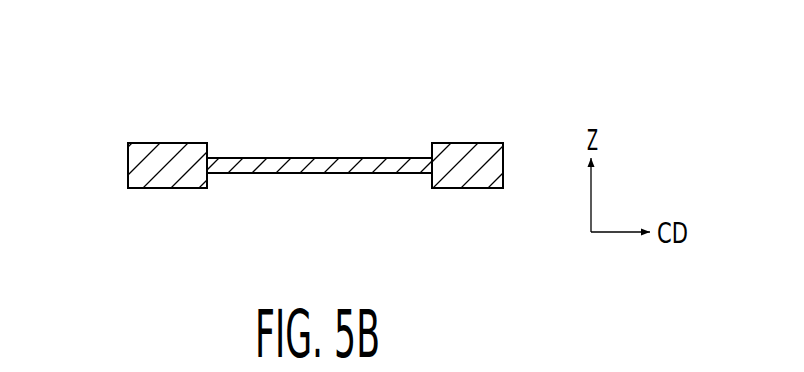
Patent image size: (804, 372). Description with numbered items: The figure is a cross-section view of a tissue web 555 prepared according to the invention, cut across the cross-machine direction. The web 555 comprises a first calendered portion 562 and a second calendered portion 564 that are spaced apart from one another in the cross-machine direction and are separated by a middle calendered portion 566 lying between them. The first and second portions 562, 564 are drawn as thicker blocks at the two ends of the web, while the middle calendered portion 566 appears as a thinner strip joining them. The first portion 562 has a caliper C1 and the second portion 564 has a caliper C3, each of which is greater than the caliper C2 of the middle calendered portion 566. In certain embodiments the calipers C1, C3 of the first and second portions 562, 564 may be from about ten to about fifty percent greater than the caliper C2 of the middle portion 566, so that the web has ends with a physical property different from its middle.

The first calendered portion 562 is at (192, 135).
The second calendered portion 564 is at (443, 127).
The middle calendered portion 566 is at (293, 143).
The web 555 is at (273, 174).
The caliper of first portion C1 is at (169, 105).
The caliper of middle portion C2 is at (389, 120).
The caliper of second portion C3 is at (467, 105).